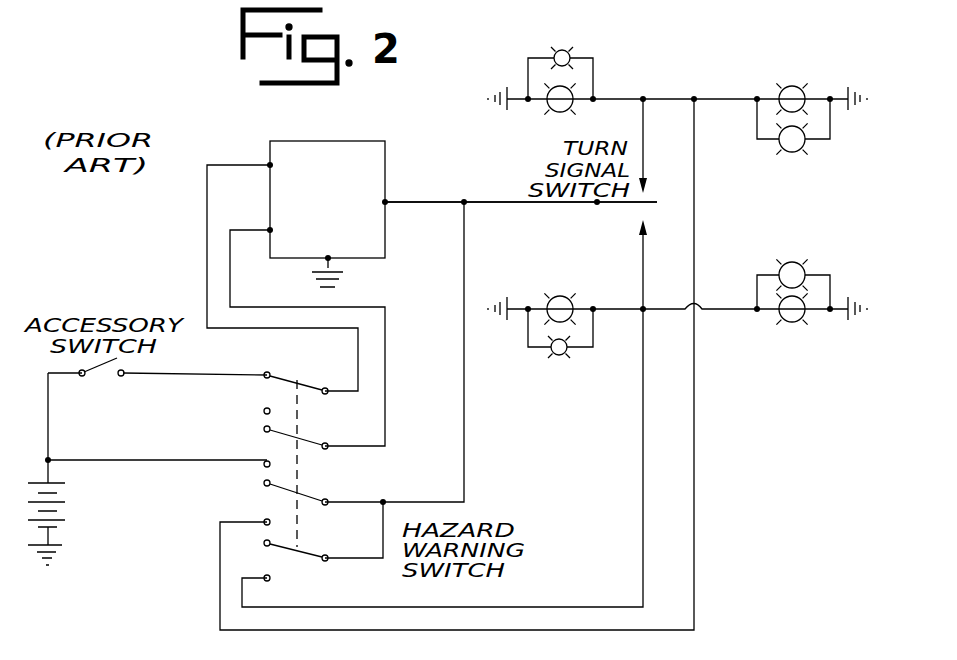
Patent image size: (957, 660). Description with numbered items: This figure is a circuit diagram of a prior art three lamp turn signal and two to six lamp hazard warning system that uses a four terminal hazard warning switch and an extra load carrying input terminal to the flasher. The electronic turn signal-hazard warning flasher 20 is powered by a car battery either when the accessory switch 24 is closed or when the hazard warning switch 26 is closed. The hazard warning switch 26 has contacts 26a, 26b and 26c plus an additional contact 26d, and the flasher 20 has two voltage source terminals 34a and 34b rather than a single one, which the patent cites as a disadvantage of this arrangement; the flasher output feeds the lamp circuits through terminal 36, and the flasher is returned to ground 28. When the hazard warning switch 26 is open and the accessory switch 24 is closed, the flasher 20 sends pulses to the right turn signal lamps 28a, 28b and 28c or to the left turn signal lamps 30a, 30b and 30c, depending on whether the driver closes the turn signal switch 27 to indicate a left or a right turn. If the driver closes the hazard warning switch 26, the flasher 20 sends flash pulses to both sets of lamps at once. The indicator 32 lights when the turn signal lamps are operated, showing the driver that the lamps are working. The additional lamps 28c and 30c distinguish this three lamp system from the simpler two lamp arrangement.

The electronic turn signal-hazard warning flasher 20 is at (349, 132).
The accessory switch 24 is at (100, 366).
The hazard warning switch 26 is at (352, 483).
The contact 26a is at (301, 552).
The contact 26b is at (305, 493).
The contact 26c is at (306, 441).
The additional contact 26d is at (281, 380).
The turn signal switch 27 is at (622, 206).
The ground 28 is at (330, 257).
The right turn signal lamp 28a is at (558, 114).
The right turn signal lamp 28b is at (792, 85).
The additional turn signal lamp 28c is at (792, 153).
The left turn signal lamp 30a is at (563, 297).
The left turn signal lamp 30b is at (792, 324).
The additional turn signal lamp 30c is at (793, 262).
The indicator 32 is at (564, 50).
The voltage source terminal 34a is at (307, 331).
The voltage source terminal 34b is at (282, 270).
The flasher output terminal 36 is at (387, 200).